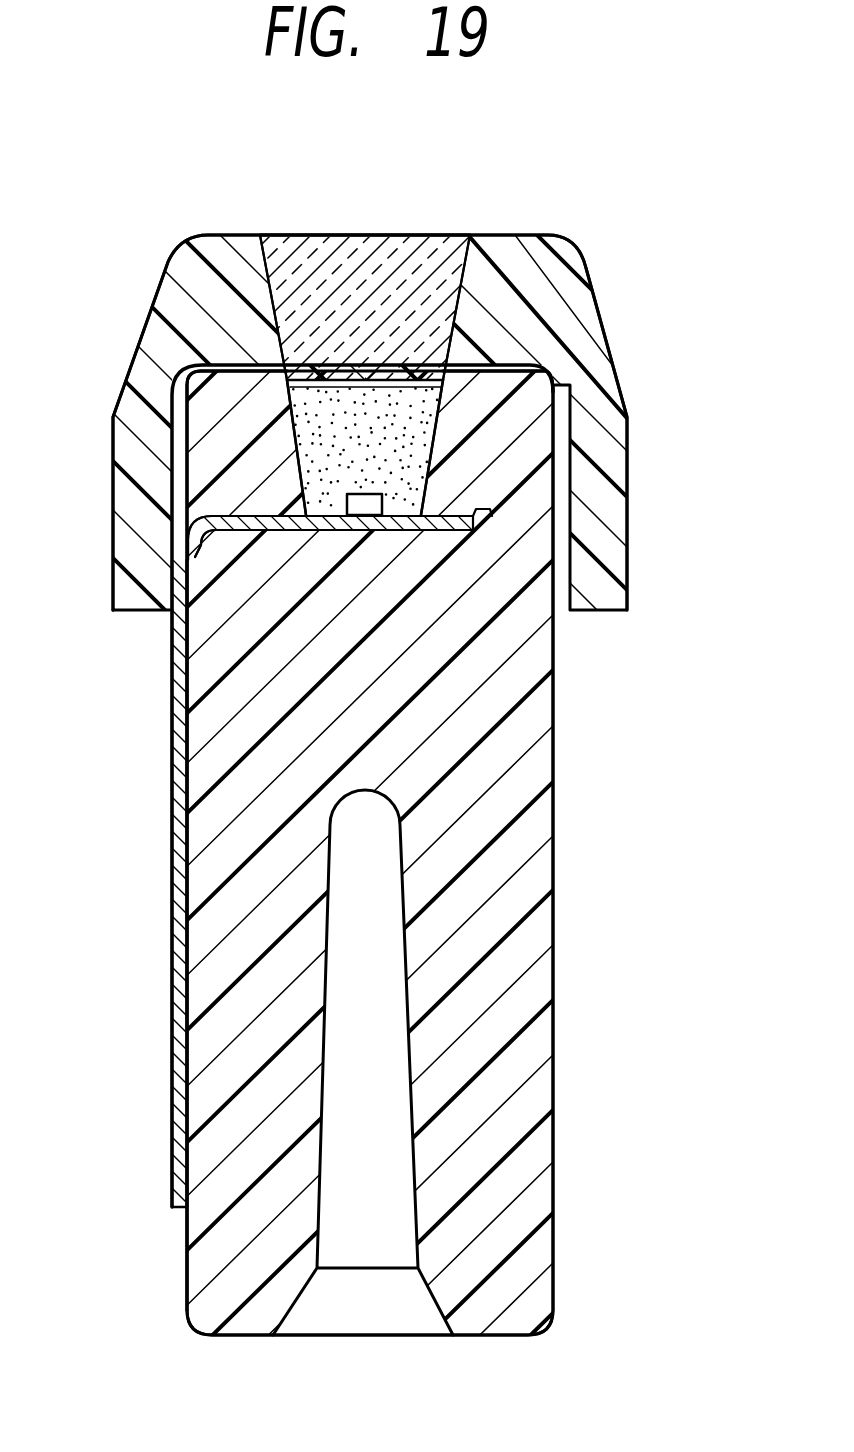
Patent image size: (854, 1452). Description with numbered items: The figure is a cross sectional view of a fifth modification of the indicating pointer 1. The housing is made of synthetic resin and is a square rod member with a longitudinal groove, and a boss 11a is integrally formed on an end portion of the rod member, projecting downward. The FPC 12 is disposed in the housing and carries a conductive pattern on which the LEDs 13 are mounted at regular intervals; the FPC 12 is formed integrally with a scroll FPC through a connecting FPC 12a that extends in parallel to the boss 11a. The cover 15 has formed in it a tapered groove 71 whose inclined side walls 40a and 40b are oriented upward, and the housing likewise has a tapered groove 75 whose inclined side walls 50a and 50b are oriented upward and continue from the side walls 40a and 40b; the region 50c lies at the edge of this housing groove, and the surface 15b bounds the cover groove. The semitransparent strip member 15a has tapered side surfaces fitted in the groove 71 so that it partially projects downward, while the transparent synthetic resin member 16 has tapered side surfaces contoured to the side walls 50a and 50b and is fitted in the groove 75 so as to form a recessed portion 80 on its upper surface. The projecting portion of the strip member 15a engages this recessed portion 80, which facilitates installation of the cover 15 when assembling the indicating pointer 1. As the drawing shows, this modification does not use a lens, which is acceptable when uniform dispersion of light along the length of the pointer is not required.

The indicating pointer 1 is at (592, 862).
The boss 11a is at (240, 962).
The FPC 12 is at (478, 510).
The connecting FPC 12a is at (172, 670).
The LED 13 is at (383, 500).
The cover 15 is at (605, 293).
The semitransparent strip member 15a is at (372, 263).
The cap tapered wall 15b is at (263, 282).
The transparent synthetic resin member 16 is at (388, 432).
The inclined side wall 40a is at (462, 307).
The inclined side wall 40b is at (275, 315).
The inclined side wall 50a is at (298, 472).
The inclined side wall 50b is at (482, 512).
The plate bent portion 50c is at (195, 555).
The tapered groove 71 is at (330, 303).
The tapered groove 75 is at (440, 412).
The recessed portion 80 is at (328, 386).